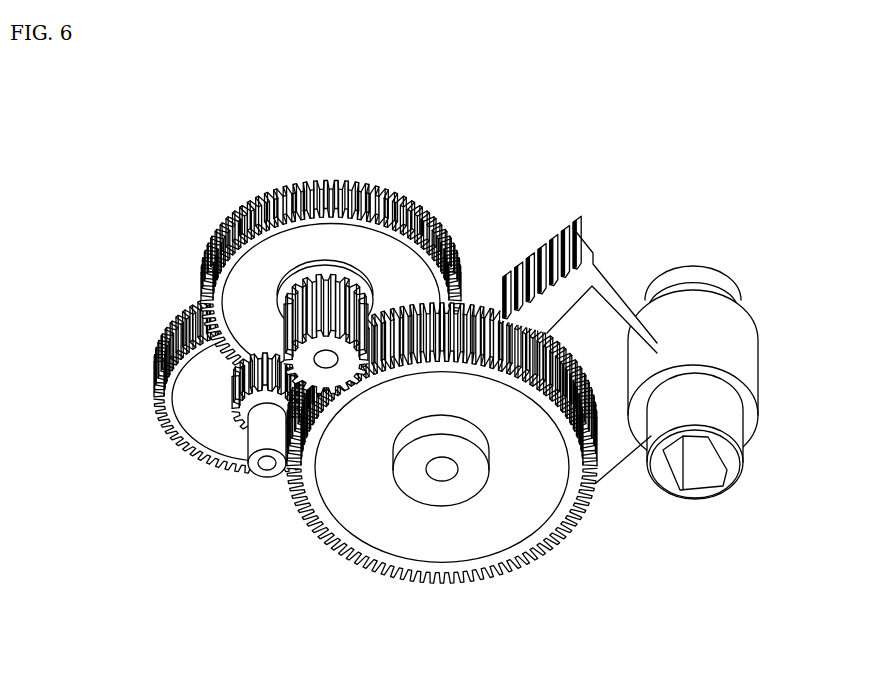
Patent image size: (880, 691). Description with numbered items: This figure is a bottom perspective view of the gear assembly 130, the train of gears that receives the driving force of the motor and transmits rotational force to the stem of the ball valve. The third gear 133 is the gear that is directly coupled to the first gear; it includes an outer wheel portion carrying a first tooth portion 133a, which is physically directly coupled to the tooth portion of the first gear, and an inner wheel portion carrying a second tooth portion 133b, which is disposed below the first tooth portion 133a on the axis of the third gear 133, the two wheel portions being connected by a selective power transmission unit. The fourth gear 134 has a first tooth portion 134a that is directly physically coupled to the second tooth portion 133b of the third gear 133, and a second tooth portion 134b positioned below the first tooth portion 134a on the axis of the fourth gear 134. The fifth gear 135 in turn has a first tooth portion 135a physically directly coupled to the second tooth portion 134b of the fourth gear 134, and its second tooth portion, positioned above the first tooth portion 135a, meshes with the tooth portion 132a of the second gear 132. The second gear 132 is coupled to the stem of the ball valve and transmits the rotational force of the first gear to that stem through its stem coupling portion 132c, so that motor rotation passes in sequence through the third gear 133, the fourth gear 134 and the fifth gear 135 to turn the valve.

The gear assembly 130 is at (184, 127).
The second gear 132 is at (629, 369).
The tooth portion 132a is at (542, 248).
The stem coupling portion 132c is at (698, 470).
The third gear 133 is at (208, 356).
The first tooth portion 133a is at (220, 346).
The second tooth portion 133b is at (232, 402).
The fourth gear 134 is at (298, 248).
The first tooth portion 134a is at (232, 374).
The second tooth portion 134b is at (297, 318).
The fifth gear 135 is at (396, 475).
The first tooth portion 135a is at (303, 515).